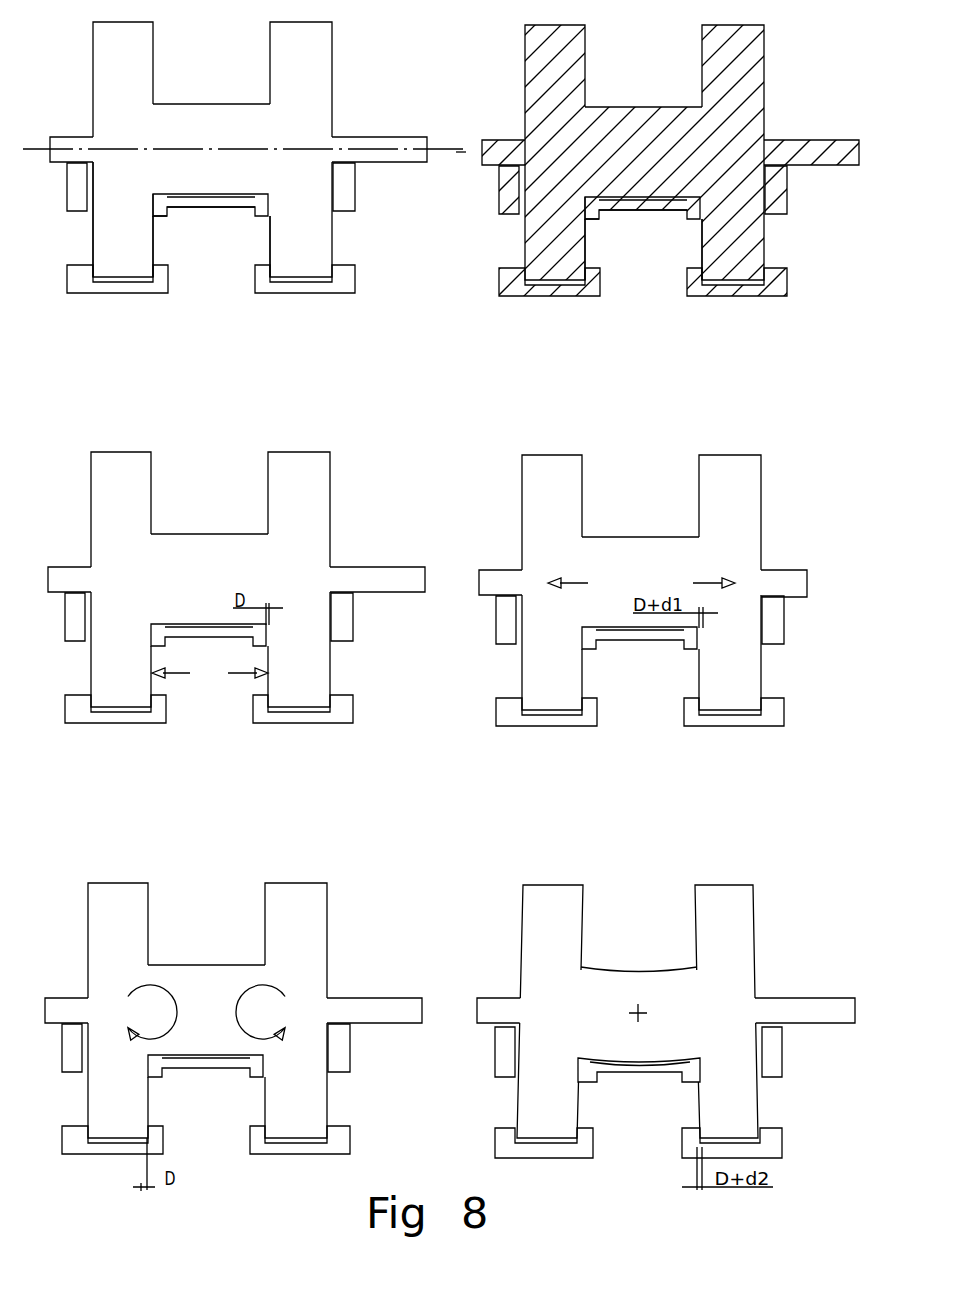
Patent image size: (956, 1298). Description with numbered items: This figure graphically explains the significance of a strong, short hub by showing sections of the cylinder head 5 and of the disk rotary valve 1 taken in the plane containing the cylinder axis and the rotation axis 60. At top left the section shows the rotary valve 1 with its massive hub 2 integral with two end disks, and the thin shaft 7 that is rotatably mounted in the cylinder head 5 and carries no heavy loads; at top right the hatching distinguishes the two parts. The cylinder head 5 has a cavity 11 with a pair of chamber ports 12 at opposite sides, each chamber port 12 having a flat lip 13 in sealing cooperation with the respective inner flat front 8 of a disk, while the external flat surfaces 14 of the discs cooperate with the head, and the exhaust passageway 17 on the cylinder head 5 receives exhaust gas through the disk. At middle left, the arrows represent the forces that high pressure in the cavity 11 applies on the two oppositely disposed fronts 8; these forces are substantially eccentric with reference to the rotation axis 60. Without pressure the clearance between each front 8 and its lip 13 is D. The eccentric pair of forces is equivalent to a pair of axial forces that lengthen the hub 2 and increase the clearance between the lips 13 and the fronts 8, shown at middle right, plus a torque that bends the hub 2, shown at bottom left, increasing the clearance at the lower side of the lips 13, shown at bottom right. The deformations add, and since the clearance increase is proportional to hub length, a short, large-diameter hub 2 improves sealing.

The rotary valve 1 is at (520, 85).
The hub 2 is at (667, 105).
The cylinder head 5 is at (563, 295).
The shaft 7 is at (407, 137).
The flat front 8 is at (588, 252).
The cavity 11 is at (657, 250).
The chamber port 12 is at (593, 217).
The flat lip 13 is at (583, 218).
The external flat surface 14 is at (92, 252).
The passageway/exhaust port 17 is at (507, 237).
The rotation axis 60 is at (450, 148).